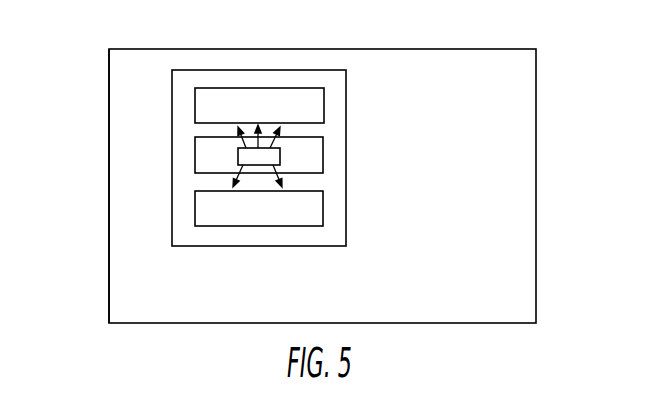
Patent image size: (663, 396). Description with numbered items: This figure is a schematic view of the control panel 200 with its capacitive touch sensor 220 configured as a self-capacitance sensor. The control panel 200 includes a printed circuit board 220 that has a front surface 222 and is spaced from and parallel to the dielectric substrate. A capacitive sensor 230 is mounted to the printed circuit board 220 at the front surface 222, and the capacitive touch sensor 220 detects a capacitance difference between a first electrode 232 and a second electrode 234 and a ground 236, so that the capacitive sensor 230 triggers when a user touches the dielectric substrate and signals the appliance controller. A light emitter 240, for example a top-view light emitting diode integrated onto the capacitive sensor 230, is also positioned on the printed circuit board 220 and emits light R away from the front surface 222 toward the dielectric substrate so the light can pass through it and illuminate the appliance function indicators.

The control panel 200 is at (437, 27).
The printed circuit board 220 is at (537, 120).
The front surface 222 is at (123, 92).
The capacitive sensor 230 is at (346, 157).
The first electrode 232 is at (324, 103).
The second electrode 234 is at (324, 207).
The ground 236 is at (195, 153).
The light emitter 240 is at (256, 158).